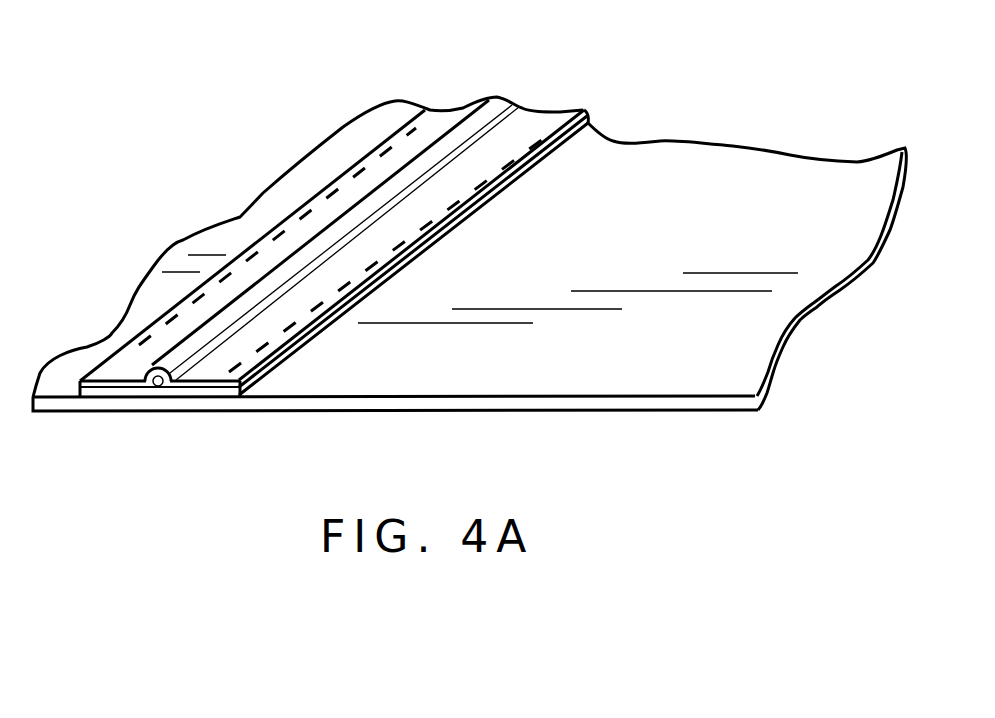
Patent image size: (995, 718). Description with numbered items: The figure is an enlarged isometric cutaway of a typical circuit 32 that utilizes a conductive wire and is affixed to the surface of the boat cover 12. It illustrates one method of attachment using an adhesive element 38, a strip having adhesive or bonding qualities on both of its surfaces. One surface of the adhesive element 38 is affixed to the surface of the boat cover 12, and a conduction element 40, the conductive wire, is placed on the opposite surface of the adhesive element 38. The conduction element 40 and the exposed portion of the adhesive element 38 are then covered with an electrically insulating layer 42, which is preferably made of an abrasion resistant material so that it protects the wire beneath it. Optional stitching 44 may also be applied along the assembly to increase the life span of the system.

The boat cover 12 is at (755, 182).
The circuit 32 is at (411, 252).
The adhesive element 38 is at (205, 392).
The conduction element 40 is at (155, 379).
The abrasion resistant layer 42 is at (442, 125).
The stitching 44 is at (536, 128).